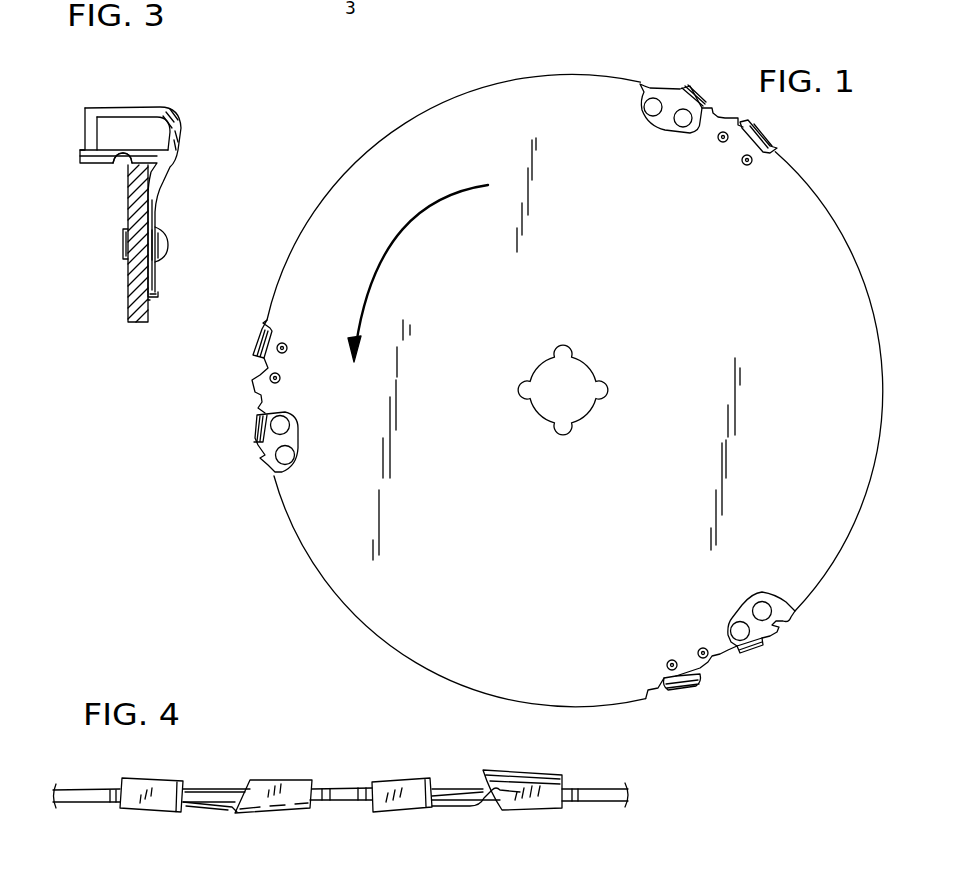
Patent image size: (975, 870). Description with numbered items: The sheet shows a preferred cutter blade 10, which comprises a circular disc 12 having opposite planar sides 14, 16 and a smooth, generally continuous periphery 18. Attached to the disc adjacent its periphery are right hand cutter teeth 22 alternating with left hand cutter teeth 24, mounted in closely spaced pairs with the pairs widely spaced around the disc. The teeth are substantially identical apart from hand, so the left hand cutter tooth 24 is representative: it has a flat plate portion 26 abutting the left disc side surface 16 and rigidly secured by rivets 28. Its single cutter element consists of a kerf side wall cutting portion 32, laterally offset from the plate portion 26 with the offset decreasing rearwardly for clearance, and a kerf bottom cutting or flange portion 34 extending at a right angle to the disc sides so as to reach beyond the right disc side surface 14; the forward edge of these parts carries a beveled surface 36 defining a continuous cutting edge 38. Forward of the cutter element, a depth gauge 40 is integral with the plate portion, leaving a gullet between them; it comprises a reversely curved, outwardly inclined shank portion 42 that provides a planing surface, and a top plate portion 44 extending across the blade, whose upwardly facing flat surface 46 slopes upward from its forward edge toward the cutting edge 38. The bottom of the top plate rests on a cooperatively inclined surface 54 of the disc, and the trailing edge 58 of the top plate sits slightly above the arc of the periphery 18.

In FIG. 1, the cutter blade 10 is at (827, 170).
In FIG. 4, the cutter blade 10 is at (263, 762).
In FIG. 3, the circular disc 12 is at (127, 310).
In FIG. 1, the circular disc 12 is at (572, 261).
In FIG. 4, the circular disc 12 is at (70, 792).
In FIG. 3, the right disc side surface 14 is at (128, 282).
In FIG. 4, the right disc side surface 14 is at (96, 791).
In FIG. 3, the left disc side surface 16 is at (150, 323).
In FIG. 4, the left disc side surface 16 is at (95, 803).
In FIG. 4, the periphery 18 is at (83, 803).
In FIG. 1, the right hand cutter teeth 22 is at (766, 139).
In FIG. 4, the right hand cutter teeth 22 is at (541, 773).
In FIG. 3, the left hand cutter teeth 24 is at (196, 122).
In FIG. 1, the left hand cutter teeth 24 is at (686, 86).
In FIG. 4, the left hand cutter teeth 24 is at (296, 814).
In FIG. 3, the flat plate portion 26 is at (153, 297).
In FIG. 3, the rivets 28 is at (167, 246).
In FIG. 3, the kerf side wall cutting portion 32 is at (176, 108).
In FIG. 3, the kerf bottom cutting or flange portion 34 is at (118, 107).
In FIG. 3, the beveled surface 36 is at (90, 109).
In FIG. 3, the cutting edge 38 is at (184, 138).
In FIG. 3, the depth gauge 40 is at (97, 143).
In FIG. 3, the shank portion 42 is at (171, 176).
In FIG. 4, the shank portion 42 is at (140, 812).
In FIG. 3, the top plate portion 44 is at (139, 146).
In FIG. 4, the top plate portion 44 is at (153, 790).
In FIG. 3, the flat surface 46 is at (100, 128).
In FIG. 3, the inclined surface 54 is at (118, 165).
In FIG. 3, the trailing edge 58 is at (138, 108).